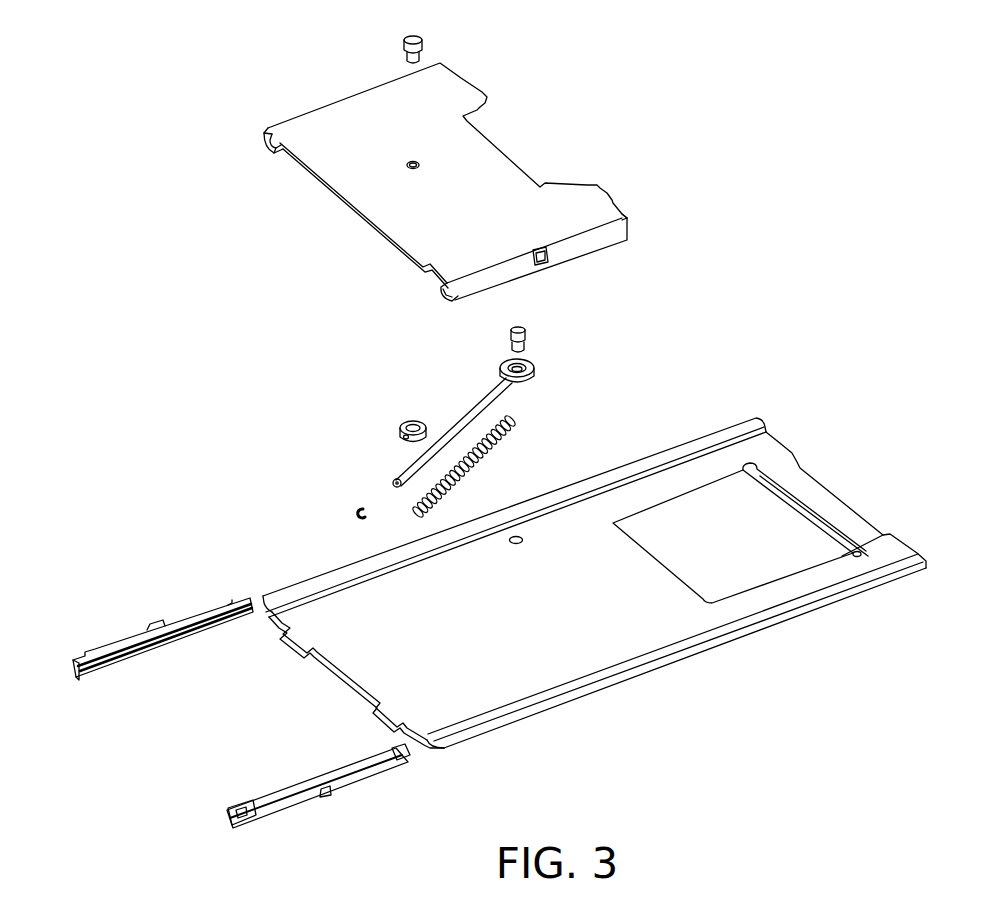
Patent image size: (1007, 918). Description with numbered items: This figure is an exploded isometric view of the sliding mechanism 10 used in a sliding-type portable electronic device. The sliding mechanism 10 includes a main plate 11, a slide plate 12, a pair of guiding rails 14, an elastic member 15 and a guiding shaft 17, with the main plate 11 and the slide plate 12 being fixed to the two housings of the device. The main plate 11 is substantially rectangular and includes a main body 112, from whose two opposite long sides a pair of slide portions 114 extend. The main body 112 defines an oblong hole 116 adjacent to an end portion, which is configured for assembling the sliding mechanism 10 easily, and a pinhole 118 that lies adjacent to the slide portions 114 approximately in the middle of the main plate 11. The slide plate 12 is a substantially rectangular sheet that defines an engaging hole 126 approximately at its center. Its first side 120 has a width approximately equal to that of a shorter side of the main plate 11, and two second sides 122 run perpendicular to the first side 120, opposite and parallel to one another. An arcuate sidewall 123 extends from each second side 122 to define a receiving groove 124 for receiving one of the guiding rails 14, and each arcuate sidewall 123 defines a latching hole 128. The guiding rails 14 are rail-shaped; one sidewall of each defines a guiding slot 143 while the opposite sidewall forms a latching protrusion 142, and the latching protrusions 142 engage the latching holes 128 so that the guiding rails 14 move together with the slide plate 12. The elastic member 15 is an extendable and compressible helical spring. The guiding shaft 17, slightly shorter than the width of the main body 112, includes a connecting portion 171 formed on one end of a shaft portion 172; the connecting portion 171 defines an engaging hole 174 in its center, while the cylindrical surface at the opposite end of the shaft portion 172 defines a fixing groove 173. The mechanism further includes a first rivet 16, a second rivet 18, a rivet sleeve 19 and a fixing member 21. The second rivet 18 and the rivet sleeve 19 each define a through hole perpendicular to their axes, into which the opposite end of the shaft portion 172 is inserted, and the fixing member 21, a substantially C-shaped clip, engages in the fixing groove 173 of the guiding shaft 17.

The sliding mechanism 10 is at (492, 44).
The main plate 11 is at (855, 466).
The main body 112 is at (846, 525).
The slide portions 114 is at (893, 567).
The oblong hole 116 is at (753, 563).
The pinhole 118 is at (521, 534).
The slide plate 12 is at (538, 137).
The first side 120 is at (385, 210).
The second sides 122 is at (600, 235).
The arcuate sidewall 123 is at (585, 224).
The receiving groove 124 is at (262, 143).
The engaging hole 126 is at (409, 163).
The latching hole 128 is at (543, 264).
The guiding rails 14 is at (266, 795).
The latching protrusion 142 is at (328, 795).
The guiding slot 143 is at (241, 618).
The elastic member 15 is at (482, 447).
The first rivet 16 is at (529, 338).
The guiding shaft 17 is at (470, 386).
The connecting portion 171 is at (534, 374).
The shaft portion 172 is at (472, 419).
The fixing groove 173 is at (396, 477).
The engaging hole 174 is at (535, 369).
The second rivet 18 is at (404, 39).
The rivet sleeve 19 is at (401, 429).
The fixing member 21 is at (362, 506).